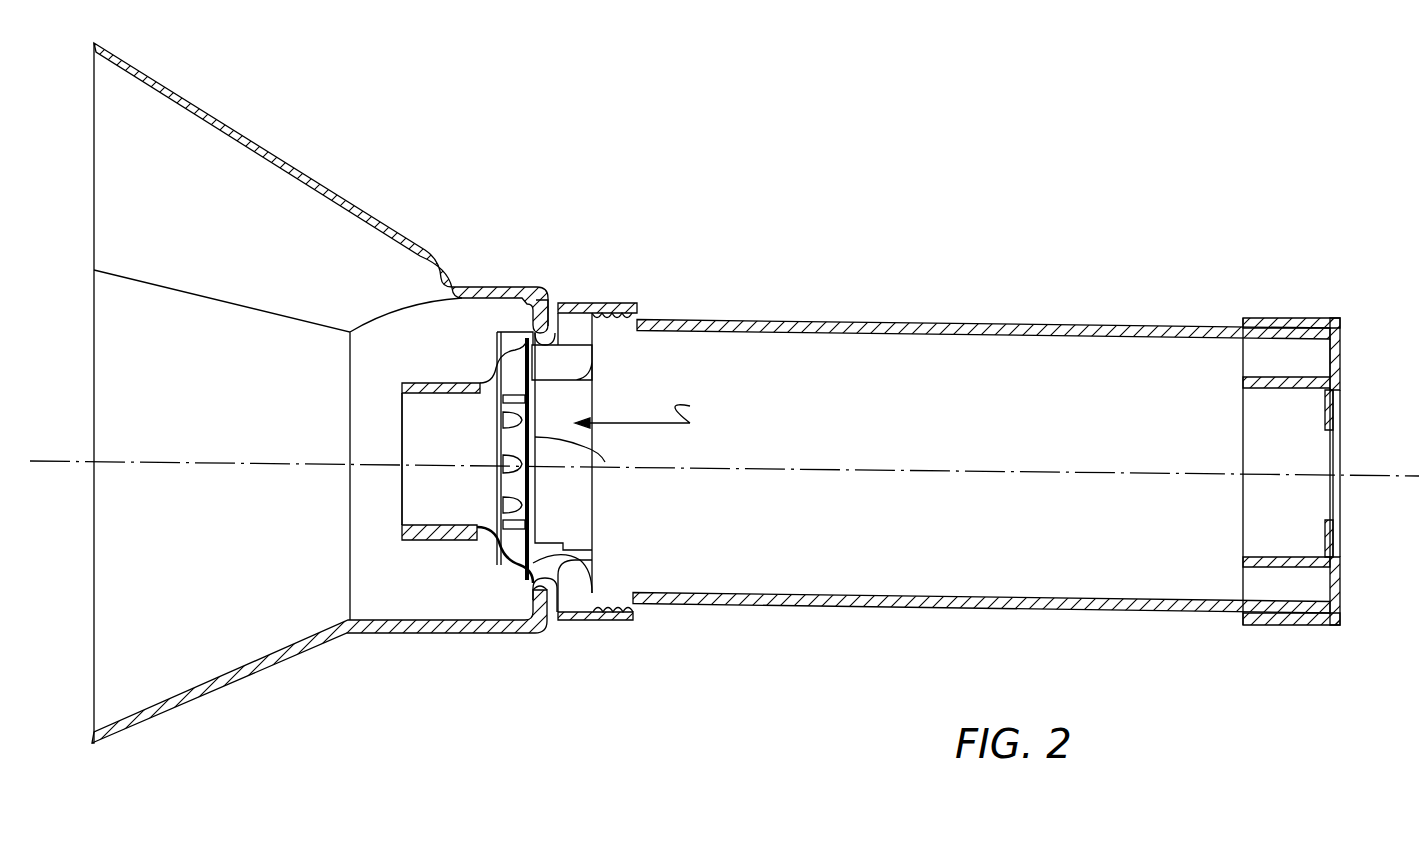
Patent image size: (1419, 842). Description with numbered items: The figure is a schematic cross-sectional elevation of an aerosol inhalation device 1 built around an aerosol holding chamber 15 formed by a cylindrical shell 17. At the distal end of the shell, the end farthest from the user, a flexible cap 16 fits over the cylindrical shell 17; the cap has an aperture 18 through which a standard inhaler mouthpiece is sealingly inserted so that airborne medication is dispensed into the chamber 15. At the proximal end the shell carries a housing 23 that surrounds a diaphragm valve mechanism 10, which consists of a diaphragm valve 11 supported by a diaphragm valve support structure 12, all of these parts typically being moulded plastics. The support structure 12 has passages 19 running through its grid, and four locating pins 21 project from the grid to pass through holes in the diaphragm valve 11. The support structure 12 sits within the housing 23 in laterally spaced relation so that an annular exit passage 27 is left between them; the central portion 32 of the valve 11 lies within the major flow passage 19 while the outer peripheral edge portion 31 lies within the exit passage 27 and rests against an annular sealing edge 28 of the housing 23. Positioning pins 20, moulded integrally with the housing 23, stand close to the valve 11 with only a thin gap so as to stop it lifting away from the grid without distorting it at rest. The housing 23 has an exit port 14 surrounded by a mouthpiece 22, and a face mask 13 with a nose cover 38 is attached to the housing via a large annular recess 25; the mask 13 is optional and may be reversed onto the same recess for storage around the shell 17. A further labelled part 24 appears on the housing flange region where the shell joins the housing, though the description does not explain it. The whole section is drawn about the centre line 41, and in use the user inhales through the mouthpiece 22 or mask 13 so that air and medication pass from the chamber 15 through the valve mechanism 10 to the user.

The aerosol inhalation device 1 is at (1007, 190).
The diaphragm valve mechanism 10 is at (600, 423).
The diaphragm valve 11 is at (497, 443).
The diaphragm valve support structure 12 is at (597, 378).
The face mask 13 is at (227, 686).
The exit port 14 is at (412, 487).
The aerosol holding chamber 15 is at (889, 522).
The flexible cap 16 is at (1342, 350).
The cylindrical shell 17 is at (1023, 323).
The aperture 18 is at (1310, 458).
The passages 19 is at (605, 462).
The positioning pins 20 is at (512, 552).
The locating pins 21 is at (470, 522).
The mouthpiece 22 is at (418, 384).
The housing 23 is at (607, 303).
The lower flange 24 is at (633, 612).
The large annular recess 25 is at (547, 300).
The annular exit passage 27 is at (553, 305).
The annular sealing edge 28 is at (520, 575).
The outer peripheral edge portion 31 is at (553, 560).
The central portion 32 is at (527, 500).
The nose cover 38 is at (323, 187).
The centre line 41 is at (1382, 478).